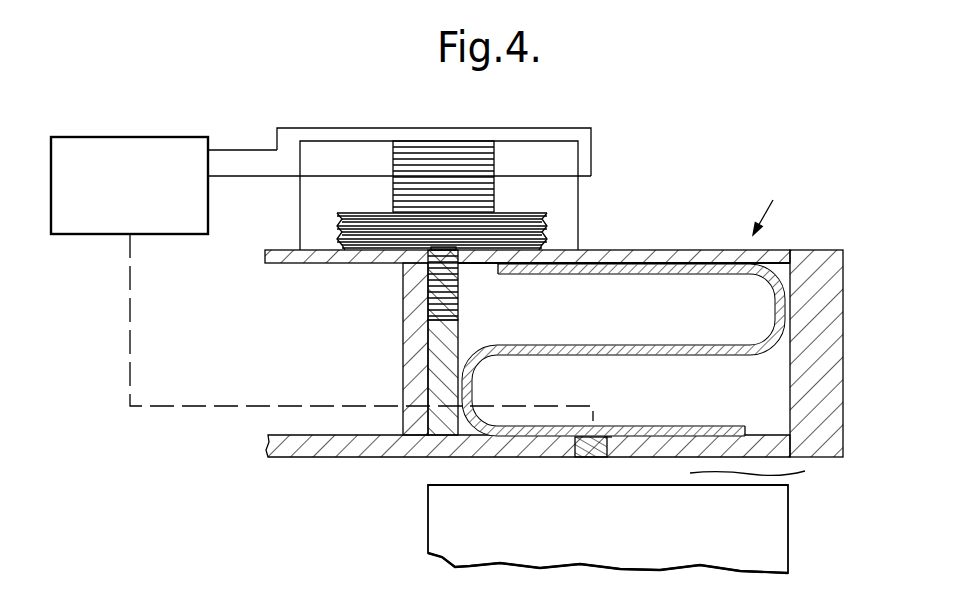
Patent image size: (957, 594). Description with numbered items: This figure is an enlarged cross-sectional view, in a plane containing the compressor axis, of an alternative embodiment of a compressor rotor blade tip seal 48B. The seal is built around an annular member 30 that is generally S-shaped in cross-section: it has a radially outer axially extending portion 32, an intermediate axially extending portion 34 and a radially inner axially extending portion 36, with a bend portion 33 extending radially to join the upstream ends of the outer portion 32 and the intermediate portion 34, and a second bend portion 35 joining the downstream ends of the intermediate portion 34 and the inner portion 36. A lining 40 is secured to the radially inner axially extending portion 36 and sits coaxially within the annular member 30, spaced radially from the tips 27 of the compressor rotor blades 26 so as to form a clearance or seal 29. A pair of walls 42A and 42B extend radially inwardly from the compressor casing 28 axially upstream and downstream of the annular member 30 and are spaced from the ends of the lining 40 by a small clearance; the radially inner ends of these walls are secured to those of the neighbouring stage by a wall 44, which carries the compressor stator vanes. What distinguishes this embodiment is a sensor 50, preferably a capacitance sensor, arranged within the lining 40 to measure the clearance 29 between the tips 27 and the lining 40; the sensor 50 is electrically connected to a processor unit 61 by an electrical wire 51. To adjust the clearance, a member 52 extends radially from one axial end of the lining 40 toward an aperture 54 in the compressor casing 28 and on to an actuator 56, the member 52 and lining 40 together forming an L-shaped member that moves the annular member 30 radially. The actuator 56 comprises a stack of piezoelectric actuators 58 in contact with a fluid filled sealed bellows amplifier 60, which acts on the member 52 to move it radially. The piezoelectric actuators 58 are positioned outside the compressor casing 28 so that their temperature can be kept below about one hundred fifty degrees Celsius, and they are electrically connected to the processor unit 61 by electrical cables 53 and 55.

The compressor rotor blades 26 is at (760, 561).
The tips 27 is at (730, 503).
The compressor casing 28 is at (647, 250).
The clearance or seal 29 is at (764, 475).
The annular member 30 is at (680, 348).
The radially outer axially extending portion 32 is at (577, 275).
The bend portion 33 is at (782, 298).
The intermediate axially extending portion 34 is at (586, 351).
The bend portion 35 is at (468, 388).
The radially inner axially extending portion 36 is at (645, 424).
The lining 40 is at (608, 440).
The wall 42A is at (412, 346).
The wall 42B is at (817, 339).
The wall 44 is at (367, 450).
The compressor rotor blade tip seal 48B is at (789, 213).
The sensor 50 is at (593, 440).
The electrical wire 51 is at (284, 406).
The member 52 is at (447, 350).
The electrical cable 53 is at (277, 177).
The aperture 54 is at (460, 258).
The electrical cable 55 is at (383, 128).
The actuator 56 is at (563, 141).
The piezoelectric actuators 58 is at (392, 168).
The fluid filled sealed bellows amplifier 60 is at (533, 213).
The processor unit 61 is at (127, 146).